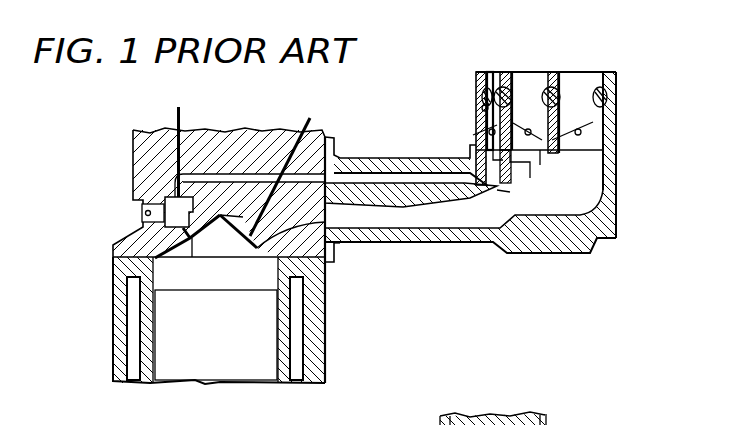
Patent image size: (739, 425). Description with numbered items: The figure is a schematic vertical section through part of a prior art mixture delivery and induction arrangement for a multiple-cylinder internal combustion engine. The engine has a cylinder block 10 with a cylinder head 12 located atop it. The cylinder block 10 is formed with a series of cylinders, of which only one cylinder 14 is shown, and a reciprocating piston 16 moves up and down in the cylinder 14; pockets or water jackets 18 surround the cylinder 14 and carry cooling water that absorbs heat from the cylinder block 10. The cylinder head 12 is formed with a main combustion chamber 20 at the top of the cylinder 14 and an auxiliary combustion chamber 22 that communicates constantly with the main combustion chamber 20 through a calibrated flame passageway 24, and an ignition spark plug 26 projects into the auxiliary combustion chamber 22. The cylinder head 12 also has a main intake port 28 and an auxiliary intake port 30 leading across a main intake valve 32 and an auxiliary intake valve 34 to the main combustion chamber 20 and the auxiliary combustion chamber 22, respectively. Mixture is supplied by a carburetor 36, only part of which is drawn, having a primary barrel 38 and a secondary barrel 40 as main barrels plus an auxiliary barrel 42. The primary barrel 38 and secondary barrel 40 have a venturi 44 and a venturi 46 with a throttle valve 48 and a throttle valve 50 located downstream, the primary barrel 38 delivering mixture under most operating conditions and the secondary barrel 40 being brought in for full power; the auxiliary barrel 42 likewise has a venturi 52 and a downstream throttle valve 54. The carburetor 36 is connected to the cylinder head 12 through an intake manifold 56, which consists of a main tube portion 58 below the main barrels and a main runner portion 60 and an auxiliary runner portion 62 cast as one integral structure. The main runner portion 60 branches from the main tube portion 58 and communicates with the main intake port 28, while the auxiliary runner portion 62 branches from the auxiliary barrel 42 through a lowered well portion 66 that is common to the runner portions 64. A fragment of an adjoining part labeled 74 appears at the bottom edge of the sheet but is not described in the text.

The cylinder block 10 is at (335, 328).
The cylinder head 12 is at (330, 131).
The cylinder 14 is at (277, 373).
The piston 16 is at (202, 343).
The water jacket 18 is at (297, 382).
The main combustion chamber 20 is at (223, 250).
The auxiliary combustion chamber 22 is at (152, 225).
The flame passageway 24 is at (190, 243).
The ignition spark plug 26 is at (168, 203).
The main intake port 28 is at (340, 243).
The auxiliary intake port 30 is at (233, 172).
The main intake valve 32 is at (257, 247).
The auxiliary intake valve 34 is at (148, 162).
The carburetor 36 is at (622, 119).
The primary barrel 38 is at (540, 78).
The secondary barrel 40 is at (590, 85).
The auxiliary barrel 42 is at (492, 78).
The venturi 44 is at (515, 95).
The venturi 46 is at (566, 92).
The throttle valve 48 is at (532, 143).
The throttle valve 50 is at (607, 129).
The venturi 52 is at (483, 105).
The throttle valve 54 is at (478, 133).
The intake manifold 56 is at (482, 250).
The main tube portion 58 is at (617, 213).
The main runner portion 60 is at (417, 243).
The auxiliary runner portion 62 is at (380, 158).
The runner portions 64 is at (496, 188).
The lowered well portion 66 is at (520, 145).
The fragment 74 is at (538, 415).